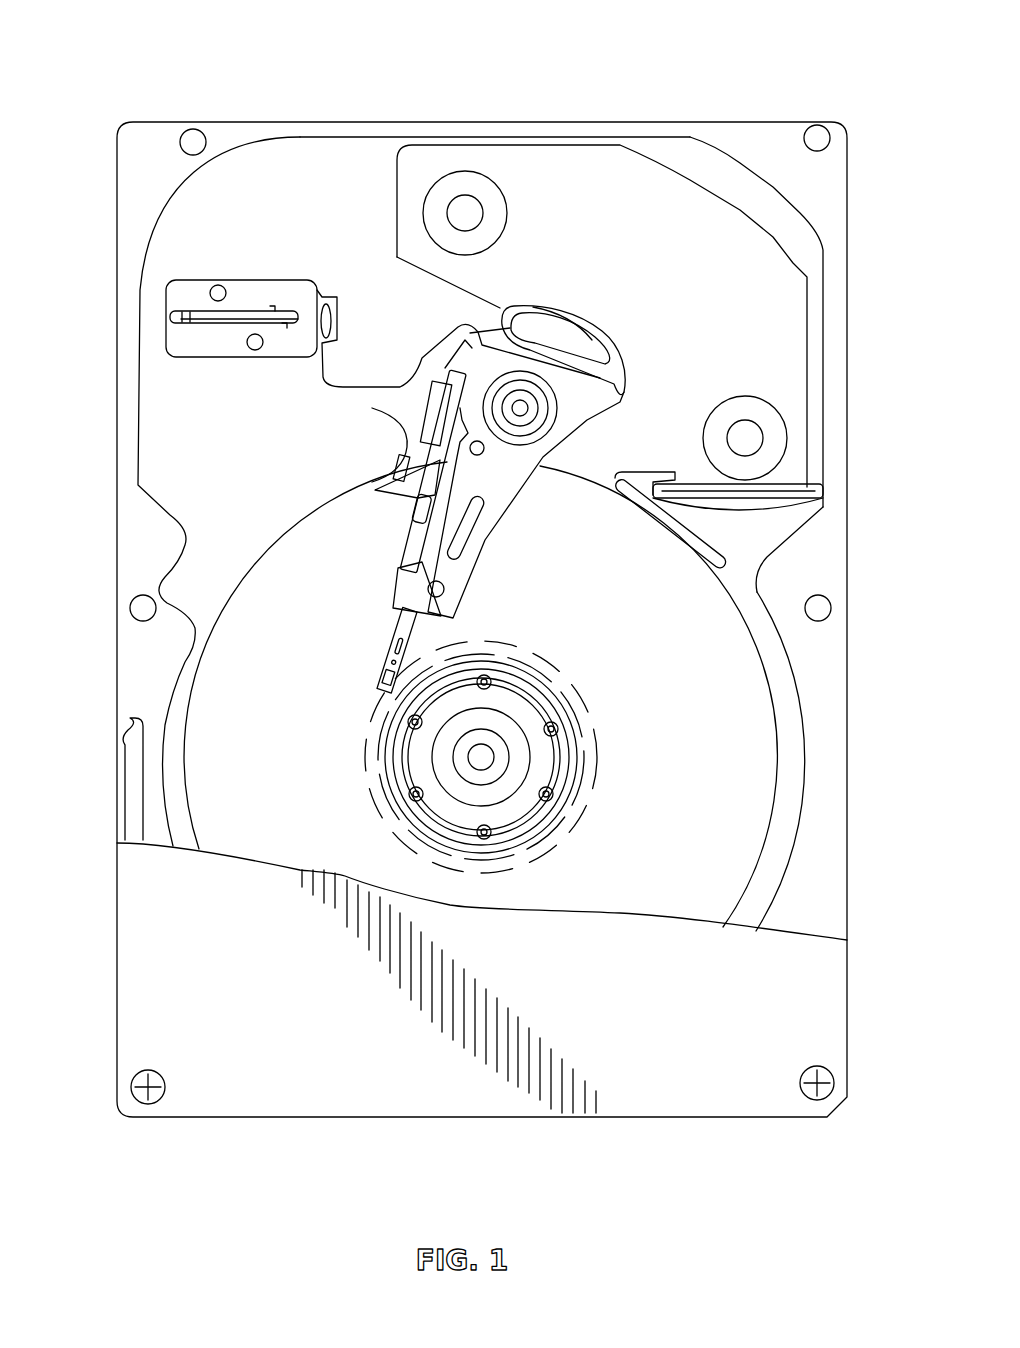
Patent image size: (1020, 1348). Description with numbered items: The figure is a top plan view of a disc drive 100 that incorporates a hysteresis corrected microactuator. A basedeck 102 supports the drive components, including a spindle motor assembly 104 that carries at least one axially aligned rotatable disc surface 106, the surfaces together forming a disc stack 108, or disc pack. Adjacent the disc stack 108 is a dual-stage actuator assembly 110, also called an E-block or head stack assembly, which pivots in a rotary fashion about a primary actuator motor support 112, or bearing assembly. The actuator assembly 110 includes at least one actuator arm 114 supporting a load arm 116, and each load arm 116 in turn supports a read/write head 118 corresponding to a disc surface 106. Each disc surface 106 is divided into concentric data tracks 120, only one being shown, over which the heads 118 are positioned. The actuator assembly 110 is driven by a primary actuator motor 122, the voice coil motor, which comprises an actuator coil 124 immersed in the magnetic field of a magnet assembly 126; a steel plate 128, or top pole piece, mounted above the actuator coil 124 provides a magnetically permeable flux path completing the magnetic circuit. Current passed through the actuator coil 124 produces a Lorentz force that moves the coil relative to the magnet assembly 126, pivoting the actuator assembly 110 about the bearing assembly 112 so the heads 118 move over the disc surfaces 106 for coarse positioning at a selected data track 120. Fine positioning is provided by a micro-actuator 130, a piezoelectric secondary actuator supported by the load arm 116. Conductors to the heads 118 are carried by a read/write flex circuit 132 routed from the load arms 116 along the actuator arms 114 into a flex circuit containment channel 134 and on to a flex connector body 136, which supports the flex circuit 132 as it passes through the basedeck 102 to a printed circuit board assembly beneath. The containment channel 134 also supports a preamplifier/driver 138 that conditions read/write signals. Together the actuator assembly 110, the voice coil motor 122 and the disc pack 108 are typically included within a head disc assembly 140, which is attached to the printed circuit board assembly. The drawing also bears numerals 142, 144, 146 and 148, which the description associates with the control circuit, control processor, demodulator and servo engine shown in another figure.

The disc drive 100 is at (385, 92).
The basedeck 102 is at (312, 182).
The spindle motor assembly 104 is at (528, 710).
The rotatable disc surface 106 is at (690, 630).
The disc stack 108 is at (780, 779).
The dual-stage actuator assembly 110 is at (510, 522).
The primary actuator motor support 112 is at (560, 397).
The actuator arm 114 is at (452, 578).
The load arm 116 is at (392, 645).
The read/write head 118 is at (383, 688).
The data track 120 is at (578, 822).
The primary actuator motor 122 is at (792, 268).
The actuator coil 124 is at (523, 323).
The magnet assembly 126 is at (549, 172).
The steel plate 128 is at (775, 353).
The micro-actuator 130 is at (375, 408).
The read/write flex circuit 132 is at (318, 382).
The flex circuit containment channel 134 is at (398, 486).
The flex connector body 136 is at (180, 347).
The preamplifier/driver 138 is at (437, 398).
The head disc assembly 140 is at (180, 930).
The base tab 142 is at (125, 747).
The cover edge 144 is at (800, 955).
The fastener 146 is at (822, 1062).
The top edge of base 148 is at (665, 114).